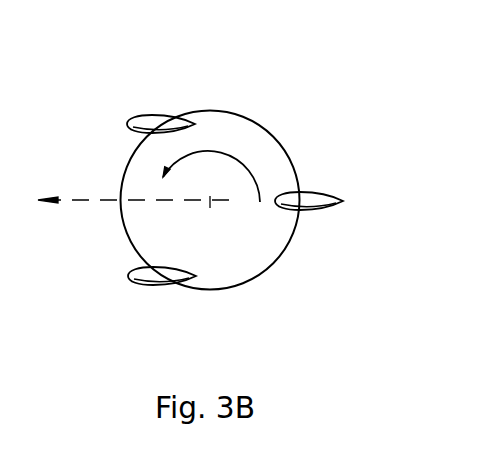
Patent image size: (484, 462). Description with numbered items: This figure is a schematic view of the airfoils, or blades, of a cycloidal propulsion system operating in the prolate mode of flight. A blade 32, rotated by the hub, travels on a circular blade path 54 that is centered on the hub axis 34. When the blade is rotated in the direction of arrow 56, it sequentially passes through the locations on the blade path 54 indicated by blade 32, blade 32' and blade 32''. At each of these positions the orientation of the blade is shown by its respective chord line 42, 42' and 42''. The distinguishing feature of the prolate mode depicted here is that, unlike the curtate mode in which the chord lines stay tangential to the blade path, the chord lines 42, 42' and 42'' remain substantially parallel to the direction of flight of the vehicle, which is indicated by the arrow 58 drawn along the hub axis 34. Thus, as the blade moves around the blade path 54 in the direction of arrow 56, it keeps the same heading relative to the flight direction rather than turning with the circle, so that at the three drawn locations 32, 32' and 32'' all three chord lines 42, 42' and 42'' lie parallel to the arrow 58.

The blade 32 is at (141, 102).
The blade location 32' is at (162, 304).
The blade location 32'' is at (329, 175).
The hub axis 34 is at (210, 200).
The chord line 42 is at (160, 91).
The chord line 42' is at (131, 296).
The chord line 42'' is at (332, 225).
The blade path 54 is at (247, 117).
The arrow 56 is at (248, 162).
The arrow 58 is at (102, 200).